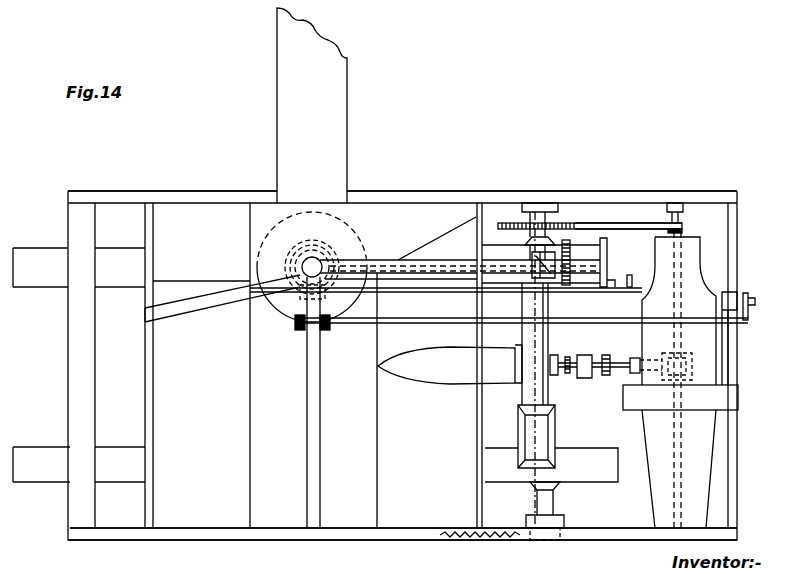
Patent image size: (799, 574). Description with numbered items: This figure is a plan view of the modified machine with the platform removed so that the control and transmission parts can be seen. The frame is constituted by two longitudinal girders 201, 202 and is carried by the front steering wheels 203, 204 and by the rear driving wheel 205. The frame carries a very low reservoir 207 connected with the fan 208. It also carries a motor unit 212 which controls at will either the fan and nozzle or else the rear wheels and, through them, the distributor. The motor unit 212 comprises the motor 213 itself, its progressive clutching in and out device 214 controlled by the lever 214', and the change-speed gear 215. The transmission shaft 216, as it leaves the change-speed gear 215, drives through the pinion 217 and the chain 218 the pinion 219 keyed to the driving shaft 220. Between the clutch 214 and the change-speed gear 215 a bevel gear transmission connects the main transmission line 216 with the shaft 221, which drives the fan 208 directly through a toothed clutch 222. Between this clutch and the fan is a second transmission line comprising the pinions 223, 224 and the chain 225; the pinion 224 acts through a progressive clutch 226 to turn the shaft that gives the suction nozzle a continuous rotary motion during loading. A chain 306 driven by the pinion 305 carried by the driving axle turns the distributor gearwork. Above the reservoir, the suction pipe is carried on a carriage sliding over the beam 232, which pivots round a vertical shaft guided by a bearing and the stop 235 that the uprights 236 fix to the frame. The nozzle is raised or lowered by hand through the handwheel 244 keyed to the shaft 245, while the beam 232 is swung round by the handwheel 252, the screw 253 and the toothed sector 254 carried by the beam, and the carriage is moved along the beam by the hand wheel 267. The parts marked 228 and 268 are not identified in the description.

The longitudinal girder 201 is at (603, 535).
The longitudinal girder 202 is at (655, 191).
The front steering wheel 203 is at (25, 458).
The front steering wheel 204 is at (53, 273).
The rear driving wheel 205 is at (597, 470).
The reservoir 207 is at (207, 510).
The fan 208 is at (545, 390).
The motor unit 212 is at (728, 400).
The motor 213 is at (705, 465).
The progressive clutching in and out device 214 is at (677, 353).
The lever 214' is at (750, 339).
The change-speed gear 215 is at (688, 256).
The transmission shaft 216 is at (682, 231).
The pinion 217 is at (677, 222).
The chain 218 is at (598, 223).
The pinion 219 is at (568, 224).
The driving shaft 220 is at (535, 225).
The shaft 221 is at (633, 373).
The toothed clutch 222 is at (610, 378).
The pinion 223 is at (560, 373).
The pinion 224 is at (571, 280).
The chain 225 is at (597, 312).
The progressive clutch 226 is at (556, 263).
The gear box 228 is at (548, 440).
The beam 232 is at (335, 85).
The stop 235 is at (318, 262).
The uprights 236 is at (399, 263).
The handwheel 244 is at (607, 250).
The shaft 245 is at (494, 267).
The handwheel 252 is at (745, 322).
The screw 253 is at (302, 328).
The toothed sector 254 is at (298, 297).
The hand wheel 267 is at (631, 283).
The bearing 268 is at (303, 292).
The pinion 305 is at (548, 538).
The chain 306 is at (497, 535).